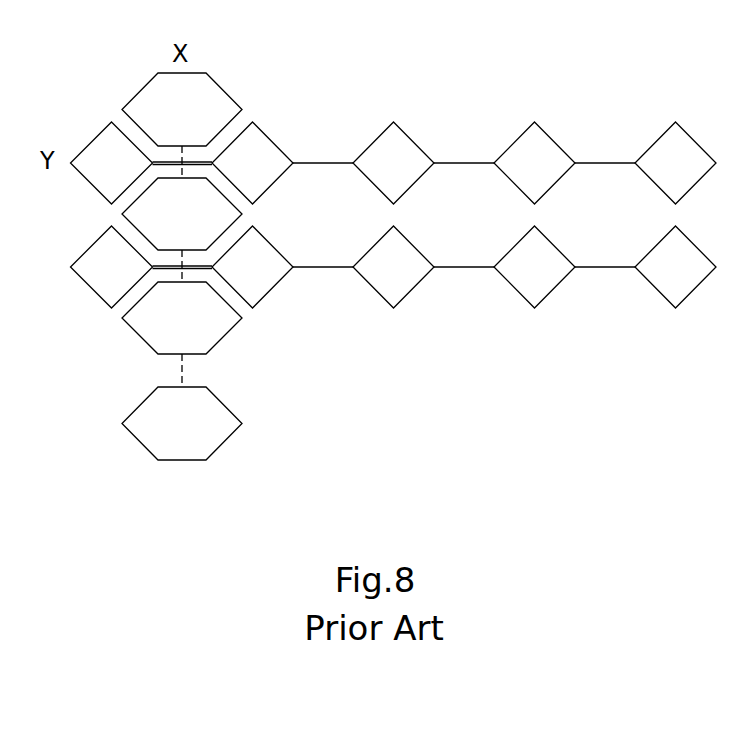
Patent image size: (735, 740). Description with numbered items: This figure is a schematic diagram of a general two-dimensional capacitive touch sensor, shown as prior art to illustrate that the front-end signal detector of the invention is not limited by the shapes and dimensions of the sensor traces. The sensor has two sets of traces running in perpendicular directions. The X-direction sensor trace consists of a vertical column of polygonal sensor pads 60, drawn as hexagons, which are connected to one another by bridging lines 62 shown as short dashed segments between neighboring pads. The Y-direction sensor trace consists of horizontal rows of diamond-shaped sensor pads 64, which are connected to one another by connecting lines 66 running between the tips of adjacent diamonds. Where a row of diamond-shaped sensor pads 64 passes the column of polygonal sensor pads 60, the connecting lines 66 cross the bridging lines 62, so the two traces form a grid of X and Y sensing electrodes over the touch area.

The polygonal sensor pads 60 is at (224, 90).
The bridging lines 62 is at (181, 373).
The diamond-shaped sensor pads 64 is at (275, 140).
The connecting lines 66 is at (323, 162).